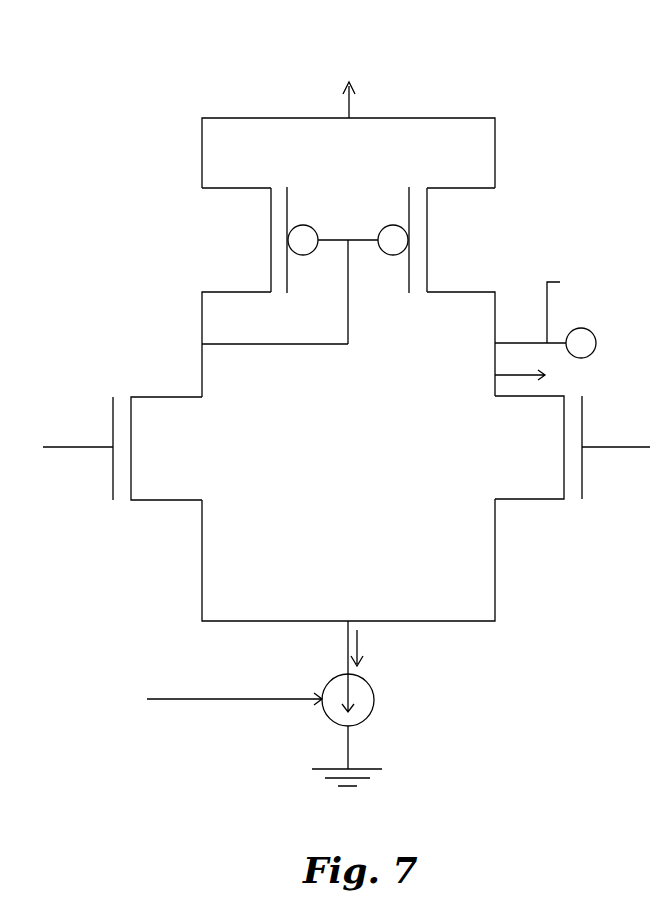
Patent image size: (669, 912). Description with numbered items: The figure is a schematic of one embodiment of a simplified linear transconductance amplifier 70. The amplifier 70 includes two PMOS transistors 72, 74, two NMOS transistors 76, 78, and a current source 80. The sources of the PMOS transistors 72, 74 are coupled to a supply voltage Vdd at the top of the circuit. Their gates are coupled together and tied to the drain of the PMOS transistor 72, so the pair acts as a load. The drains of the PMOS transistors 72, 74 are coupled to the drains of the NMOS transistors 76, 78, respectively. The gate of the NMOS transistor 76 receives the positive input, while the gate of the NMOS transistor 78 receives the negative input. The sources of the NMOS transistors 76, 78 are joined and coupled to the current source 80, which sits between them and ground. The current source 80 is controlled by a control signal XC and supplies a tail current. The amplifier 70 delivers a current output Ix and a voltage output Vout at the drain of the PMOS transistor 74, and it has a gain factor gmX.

The transconductance amplifier 70 is at (530, 648).
The PMOS transistor 72 is at (271, 240).
The PMOS transistor 74 is at (427, 240).
The NMOS transistor 76 is at (131, 447).
The NMOS transistor 78 is at (564, 447).
The current source 80 is at (374, 699).